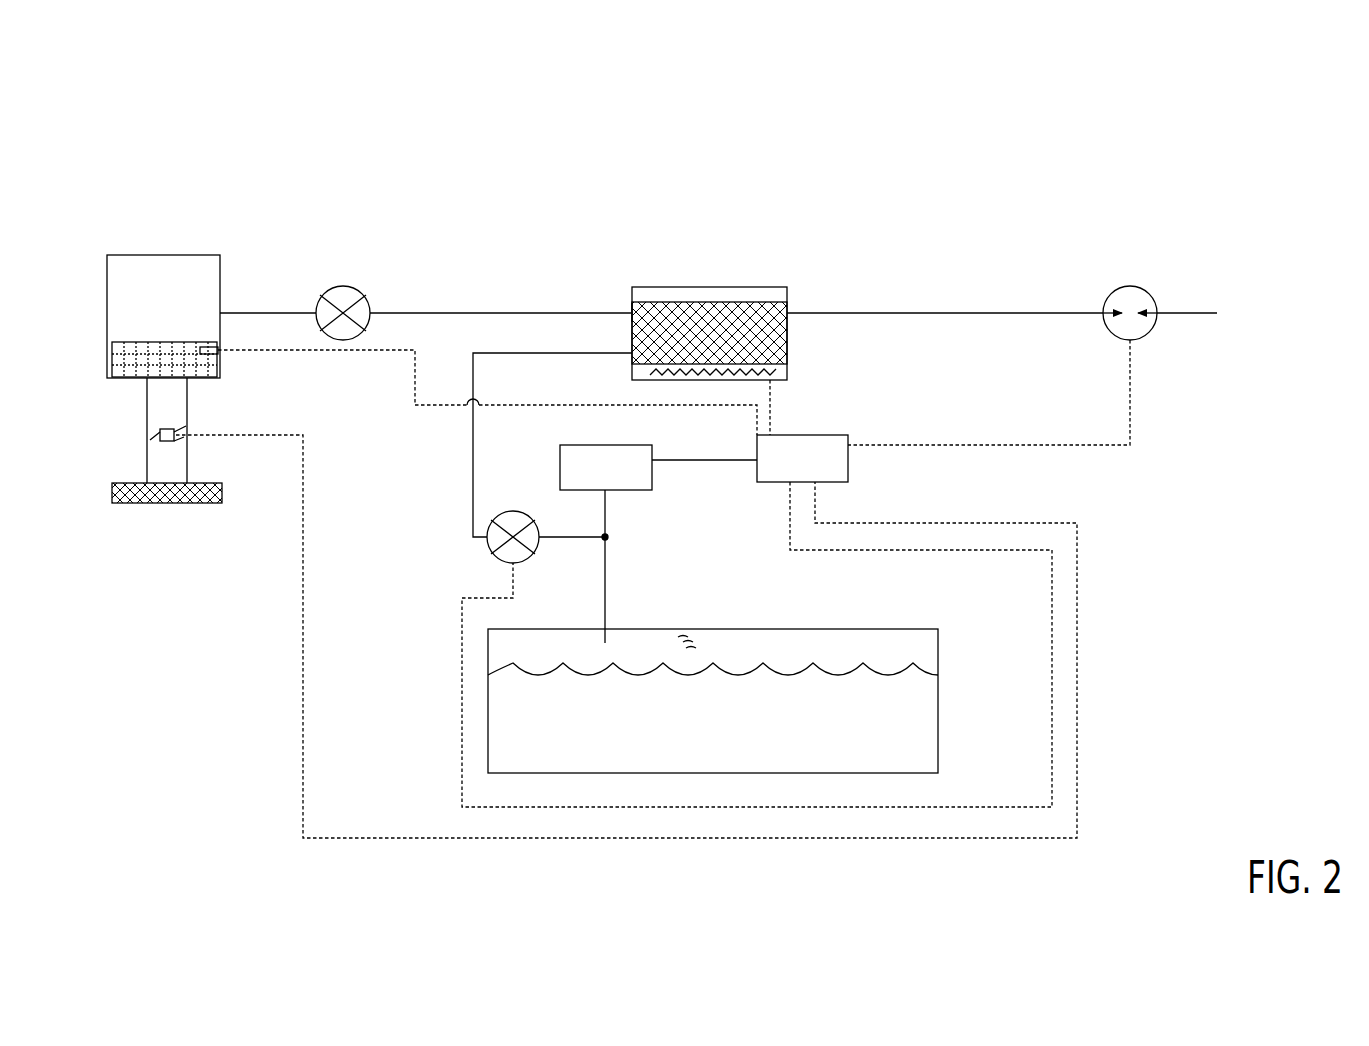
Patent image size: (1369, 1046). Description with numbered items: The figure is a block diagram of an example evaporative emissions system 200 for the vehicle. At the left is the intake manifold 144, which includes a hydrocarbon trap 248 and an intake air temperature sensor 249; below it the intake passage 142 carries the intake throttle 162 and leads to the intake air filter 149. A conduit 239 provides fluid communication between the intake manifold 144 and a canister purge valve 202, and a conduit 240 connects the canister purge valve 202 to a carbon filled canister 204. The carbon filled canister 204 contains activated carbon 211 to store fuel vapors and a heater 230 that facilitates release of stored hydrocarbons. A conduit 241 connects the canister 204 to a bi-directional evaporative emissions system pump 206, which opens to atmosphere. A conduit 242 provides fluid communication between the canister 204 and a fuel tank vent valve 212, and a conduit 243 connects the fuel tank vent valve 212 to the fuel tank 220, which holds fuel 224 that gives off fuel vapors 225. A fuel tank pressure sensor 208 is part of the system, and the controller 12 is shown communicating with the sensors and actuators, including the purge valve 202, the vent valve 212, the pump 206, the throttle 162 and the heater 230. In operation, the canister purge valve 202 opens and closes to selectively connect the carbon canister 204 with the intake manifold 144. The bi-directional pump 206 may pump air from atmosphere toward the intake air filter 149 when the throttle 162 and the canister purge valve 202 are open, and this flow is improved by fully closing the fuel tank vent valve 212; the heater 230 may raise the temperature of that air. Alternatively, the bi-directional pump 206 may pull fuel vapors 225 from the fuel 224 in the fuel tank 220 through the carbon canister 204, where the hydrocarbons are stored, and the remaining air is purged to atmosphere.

The evaporative emissions system 200 is at (191, 146).
The intake manifold 144 is at (163, 316).
The hydrocarbon trap 248 is at (120, 357).
The intake air temperature sensor 249 is at (216, 352).
The intake passage 142 is at (124, 429).
The intake throttle 162 is at (174, 436).
The intake air filter 149 is at (120, 497).
The conduit 239 is at (236, 313).
The canister purge valve 202 is at (344, 287).
The conduit 240 is at (458, 313).
The conduit 242 is at (492, 353).
The activated carbon 211 is at (631, 310).
The carbon filled canister 204 is at (691, 287).
The heater 230 is at (772, 375).
The conduit 241 is at (910, 313).
The bi-directional evaporative emissions system pump 206 is at (1131, 286).
The fuel tank pressure sensor 208 is at (596, 445).
The controller 12 is at (757, 621).
The fuel tank vent valve 212 is at (513, 510).
The conduit 243 is at (606, 566).
The fuel tank 220 is at (939, 642).
The fuel 224 is at (924, 750).
The fuel vapors 225 is at (707, 647).